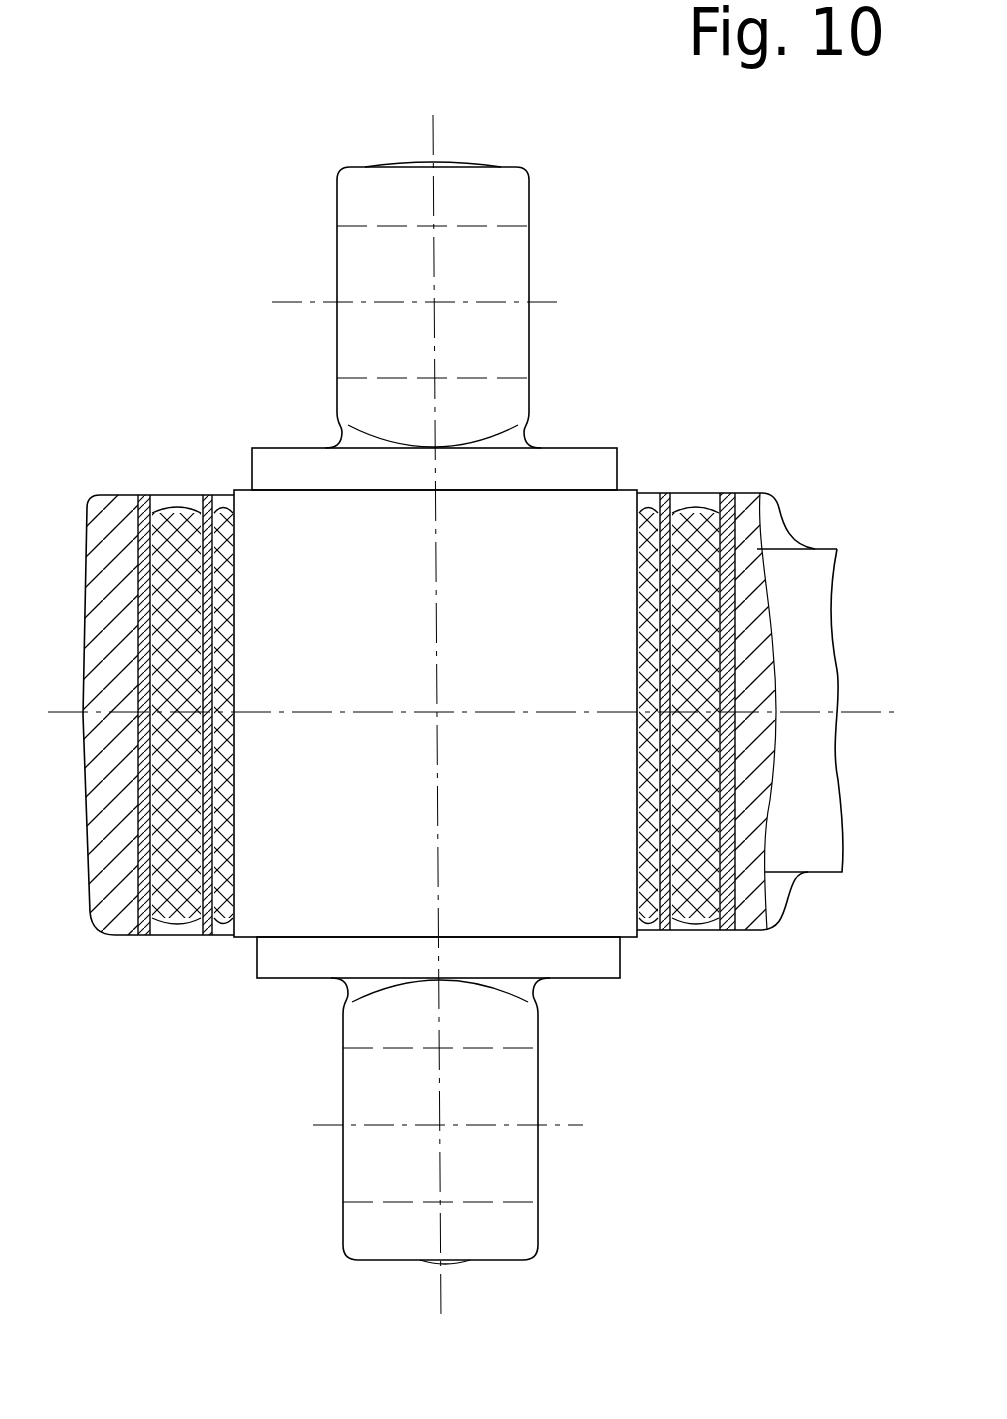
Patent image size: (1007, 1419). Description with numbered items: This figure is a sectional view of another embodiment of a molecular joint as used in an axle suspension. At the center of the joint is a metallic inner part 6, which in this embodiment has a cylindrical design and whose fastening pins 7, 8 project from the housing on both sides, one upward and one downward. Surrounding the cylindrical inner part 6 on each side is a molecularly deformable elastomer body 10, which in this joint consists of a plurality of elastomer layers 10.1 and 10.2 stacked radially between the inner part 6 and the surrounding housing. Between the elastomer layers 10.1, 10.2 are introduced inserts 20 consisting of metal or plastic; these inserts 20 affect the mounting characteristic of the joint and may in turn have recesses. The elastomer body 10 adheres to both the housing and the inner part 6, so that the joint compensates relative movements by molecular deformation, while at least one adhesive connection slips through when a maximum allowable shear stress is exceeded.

The inner part 6 is at (526, 561).
The fastening pin 7 is at (515, 1225).
The fastening pin 8 is at (500, 193).
The elastomer body 10 is at (252, 232).
The elastomer layer 10.1 is at (176, 530).
The elastomer layer 10.2 is at (215, 520).
The insert 20 is at (212, 928).